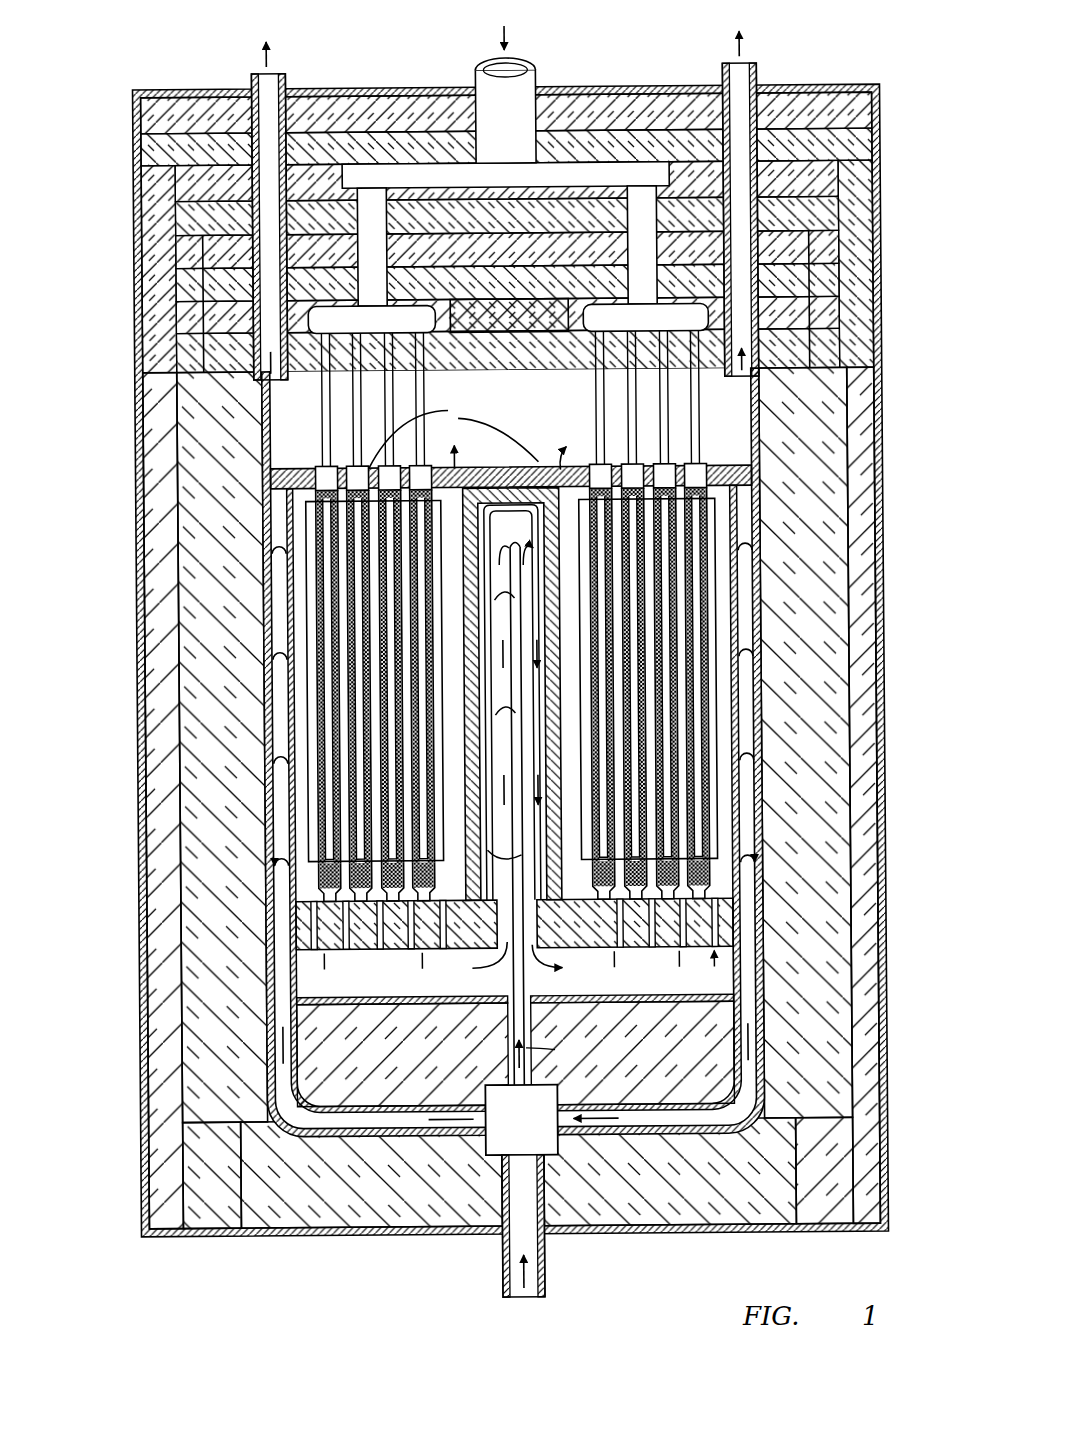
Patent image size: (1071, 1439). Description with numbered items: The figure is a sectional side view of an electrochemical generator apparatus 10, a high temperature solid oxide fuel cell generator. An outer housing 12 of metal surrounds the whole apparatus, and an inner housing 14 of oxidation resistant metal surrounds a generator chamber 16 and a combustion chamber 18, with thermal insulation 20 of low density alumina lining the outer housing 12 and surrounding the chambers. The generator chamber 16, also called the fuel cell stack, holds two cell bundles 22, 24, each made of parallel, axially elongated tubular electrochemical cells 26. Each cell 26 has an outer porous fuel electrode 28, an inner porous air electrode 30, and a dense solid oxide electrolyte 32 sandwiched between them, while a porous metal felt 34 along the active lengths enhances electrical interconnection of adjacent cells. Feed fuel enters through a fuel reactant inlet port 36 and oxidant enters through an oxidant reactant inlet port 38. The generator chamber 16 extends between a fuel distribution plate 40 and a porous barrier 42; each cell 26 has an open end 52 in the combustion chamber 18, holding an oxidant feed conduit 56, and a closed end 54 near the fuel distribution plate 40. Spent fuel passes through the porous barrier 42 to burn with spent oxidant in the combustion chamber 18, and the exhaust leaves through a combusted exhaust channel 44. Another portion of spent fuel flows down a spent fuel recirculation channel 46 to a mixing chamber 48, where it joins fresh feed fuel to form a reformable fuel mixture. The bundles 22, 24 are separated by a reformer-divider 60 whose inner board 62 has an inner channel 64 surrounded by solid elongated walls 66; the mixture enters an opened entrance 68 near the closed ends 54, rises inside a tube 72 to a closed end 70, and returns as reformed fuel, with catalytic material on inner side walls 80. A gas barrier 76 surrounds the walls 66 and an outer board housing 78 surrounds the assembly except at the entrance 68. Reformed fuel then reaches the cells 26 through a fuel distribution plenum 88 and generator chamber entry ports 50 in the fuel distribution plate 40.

The electrochemical generator apparatus 10 is at (483, 674).
The outer housing 12 is at (797, 87).
The inner housing 14 is at (762, 385).
The generator chamber 16 is at (82, 492).
The combustion chamber 18 is at (82, 373).
The thermal insulation 20 is at (858, 105).
The cell bundle 22 is at (322, 892).
The cell bundle 24 is at (740, 905).
The electrochemical cell 26 is at (640, 628).
The fuel electrode 28 is at (705, 668).
The air electrode 30 is at (705, 717).
The solid oxide electrolyte 32 is at (712, 727).
The porous metal felt 34 is at (760, 503).
The fuel reactant inlet port 36 is at (541, 1268).
The oxidant reactant inlet port 38 is at (480, 64).
The fuel distribution plate 40 is at (327, 950).
The porous barrier 42 is at (295, 473).
The combusted exhaust channel 44 is at (258, 78).
The spent fuel recirculation channel 46 is at (265, 618).
The mixing chamber 48 is at (505, 1142).
The generator chamber entry port 50 is at (410, 948).
The open end 52 is at (667, 468).
The closed end 54 is at (604, 878).
The oxidant feed conduit 56 is at (668, 410).
The reformer-divider 60 is at (488, 700).
The inner board 62 is at (490, 760).
The inner channel 64 is at (490, 860).
The solid elongated wall 66 is at (483, 627).
The opened entrance 68 is at (473, 930).
The closed end 70 is at (540, 552).
The tube 72 is at (542, 588).
The gas barrier 76 is at (478, 578).
The outer board housing 78 is at (490, 792).
The inner side wall 80 is at (542, 700).
The fuel distribution plenum 88 is at (300, 993).